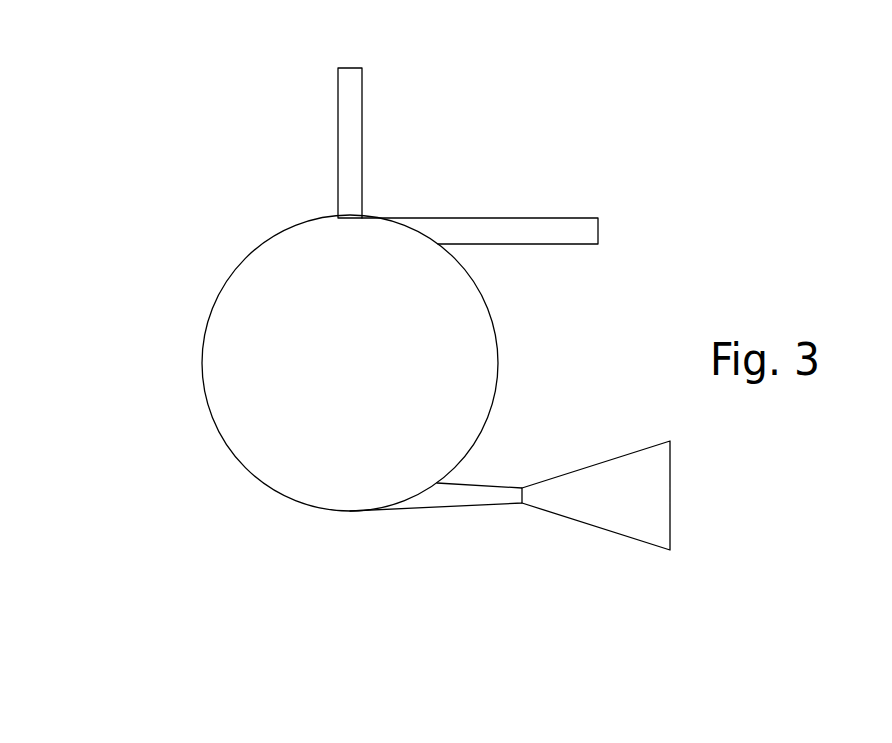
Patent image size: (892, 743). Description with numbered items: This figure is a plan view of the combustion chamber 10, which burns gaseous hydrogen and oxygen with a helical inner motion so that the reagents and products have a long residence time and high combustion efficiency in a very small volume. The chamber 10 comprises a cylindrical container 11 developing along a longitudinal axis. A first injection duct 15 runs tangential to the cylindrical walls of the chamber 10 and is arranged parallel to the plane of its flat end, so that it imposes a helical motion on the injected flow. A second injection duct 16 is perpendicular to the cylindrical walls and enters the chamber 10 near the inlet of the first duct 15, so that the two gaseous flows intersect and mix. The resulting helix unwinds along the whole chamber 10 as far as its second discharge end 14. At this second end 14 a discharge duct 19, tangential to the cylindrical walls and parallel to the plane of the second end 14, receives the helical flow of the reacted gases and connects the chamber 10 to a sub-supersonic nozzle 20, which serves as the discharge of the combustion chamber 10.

The combustion chamber 10 is at (221, 211).
The cylindrical container 11 is at (199, 449).
The second end 14 is at (345, 372).
The first injection duct 15 is at (527, 228).
The second injection duct 16 is at (355, 125).
The discharge duct 19 is at (458, 498).
The sub-supersonic nozzle 20 is at (610, 499).